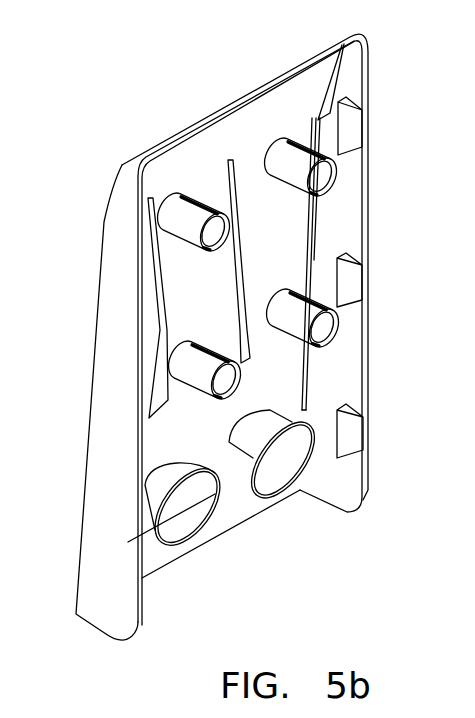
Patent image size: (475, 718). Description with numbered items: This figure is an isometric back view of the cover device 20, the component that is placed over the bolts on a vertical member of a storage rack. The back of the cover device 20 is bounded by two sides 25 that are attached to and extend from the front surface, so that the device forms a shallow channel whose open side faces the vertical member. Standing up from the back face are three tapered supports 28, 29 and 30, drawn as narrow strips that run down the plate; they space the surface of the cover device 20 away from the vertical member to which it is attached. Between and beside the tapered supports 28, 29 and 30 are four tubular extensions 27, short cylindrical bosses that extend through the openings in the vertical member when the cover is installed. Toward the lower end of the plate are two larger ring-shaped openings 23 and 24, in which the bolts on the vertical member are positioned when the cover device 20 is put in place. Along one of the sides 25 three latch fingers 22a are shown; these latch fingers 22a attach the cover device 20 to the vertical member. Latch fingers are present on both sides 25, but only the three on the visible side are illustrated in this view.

The cover device 20 is at (298, 613).
The latch fingers 22a is at (352, 125).
The bolt opening 23 is at (185, 548).
The bolt opening 24 is at (270, 495).
The sides 25 is at (120, 288).
The tubular extensions 27 is at (185, 222).
The tapered support 28 is at (152, 168).
The tapered support 29 is at (230, 160).
The tapered support 30 is at (315, 120).